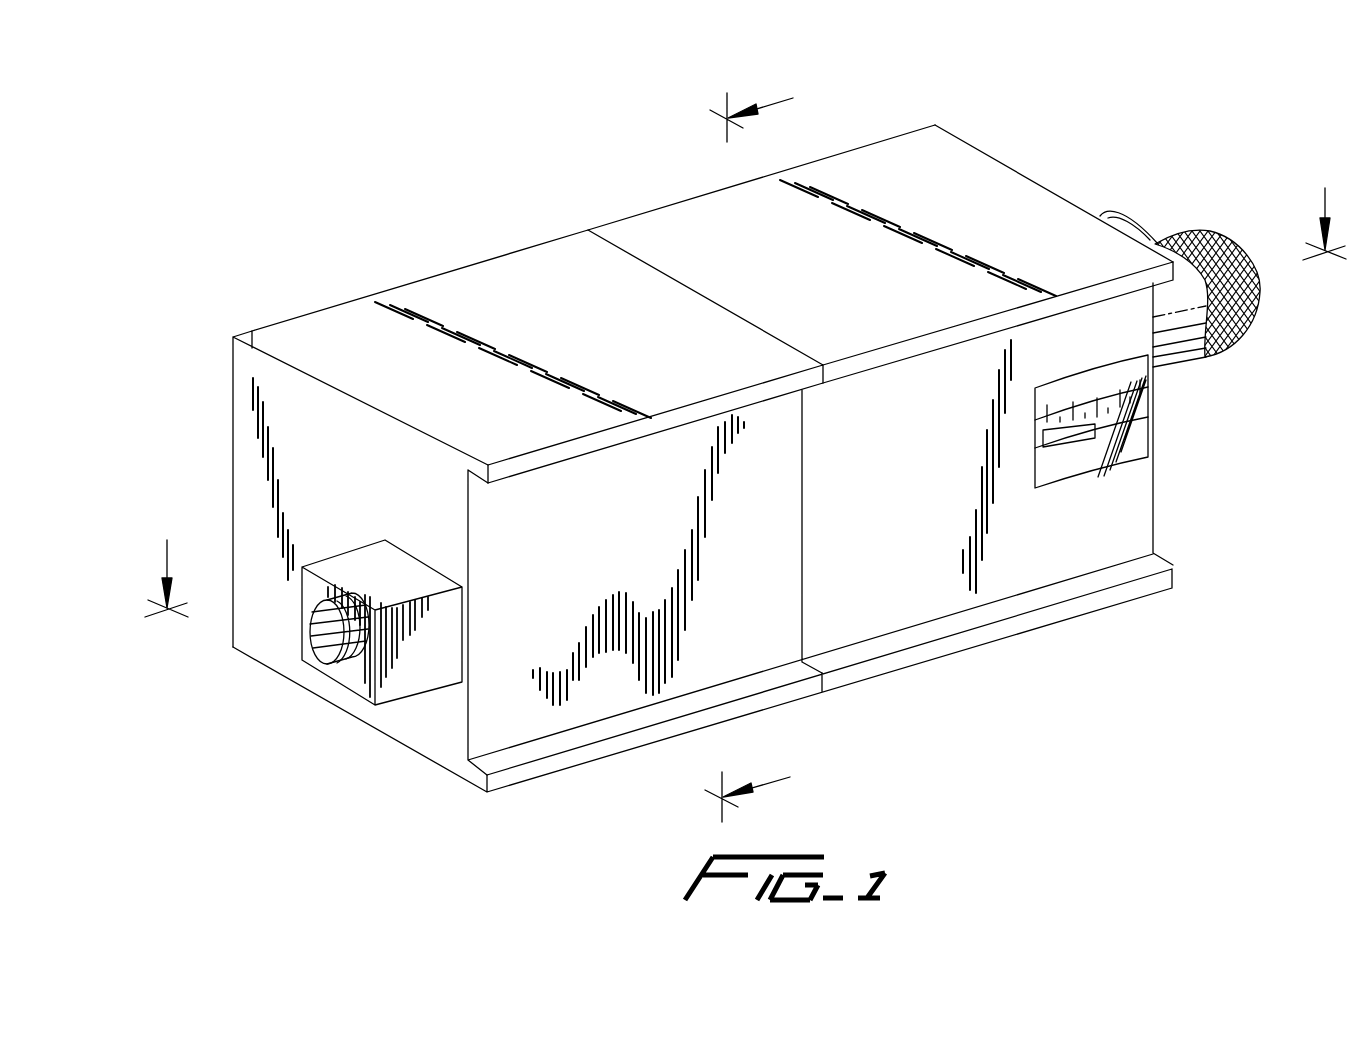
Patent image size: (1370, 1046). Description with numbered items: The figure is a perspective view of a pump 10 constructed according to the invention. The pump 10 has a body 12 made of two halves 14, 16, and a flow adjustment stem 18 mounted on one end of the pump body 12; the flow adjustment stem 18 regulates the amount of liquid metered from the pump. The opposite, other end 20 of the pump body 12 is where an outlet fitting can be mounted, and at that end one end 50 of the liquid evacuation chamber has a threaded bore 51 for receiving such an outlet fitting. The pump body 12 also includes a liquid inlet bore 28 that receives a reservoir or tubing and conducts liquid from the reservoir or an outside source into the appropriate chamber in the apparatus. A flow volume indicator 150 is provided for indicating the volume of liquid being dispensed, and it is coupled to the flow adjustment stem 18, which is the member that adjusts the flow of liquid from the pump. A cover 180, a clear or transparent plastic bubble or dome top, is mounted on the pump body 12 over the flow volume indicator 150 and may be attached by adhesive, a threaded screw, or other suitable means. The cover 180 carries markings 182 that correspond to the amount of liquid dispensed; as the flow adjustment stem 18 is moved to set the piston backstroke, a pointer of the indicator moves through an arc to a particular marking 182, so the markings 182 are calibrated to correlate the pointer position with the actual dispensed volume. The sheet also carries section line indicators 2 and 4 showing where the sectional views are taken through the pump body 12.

The pump 10 is at (506, 106).
The pump body 12 is at (814, 297).
The first half of pump body 14 is at (835, 174).
The second half of pump body 16 is at (447, 293).
The flow adjustment stem 18 is at (1248, 337).
The other end of pump body 20 is at (413, 723).
The liquid inlet bore 28 is at (1060, 193).
The end of liquid evacuation chamber 50 is at (345, 667).
The threaded bore 51 is at (336, 665).
The flow volume indicator 150 is at (1065, 438).
The cover 180 is at (1153, 452).
The markings 182 is at (1145, 380).
The section line 2- 2 is at (745, 402).
The section line 4- 4 is at (749, 448).